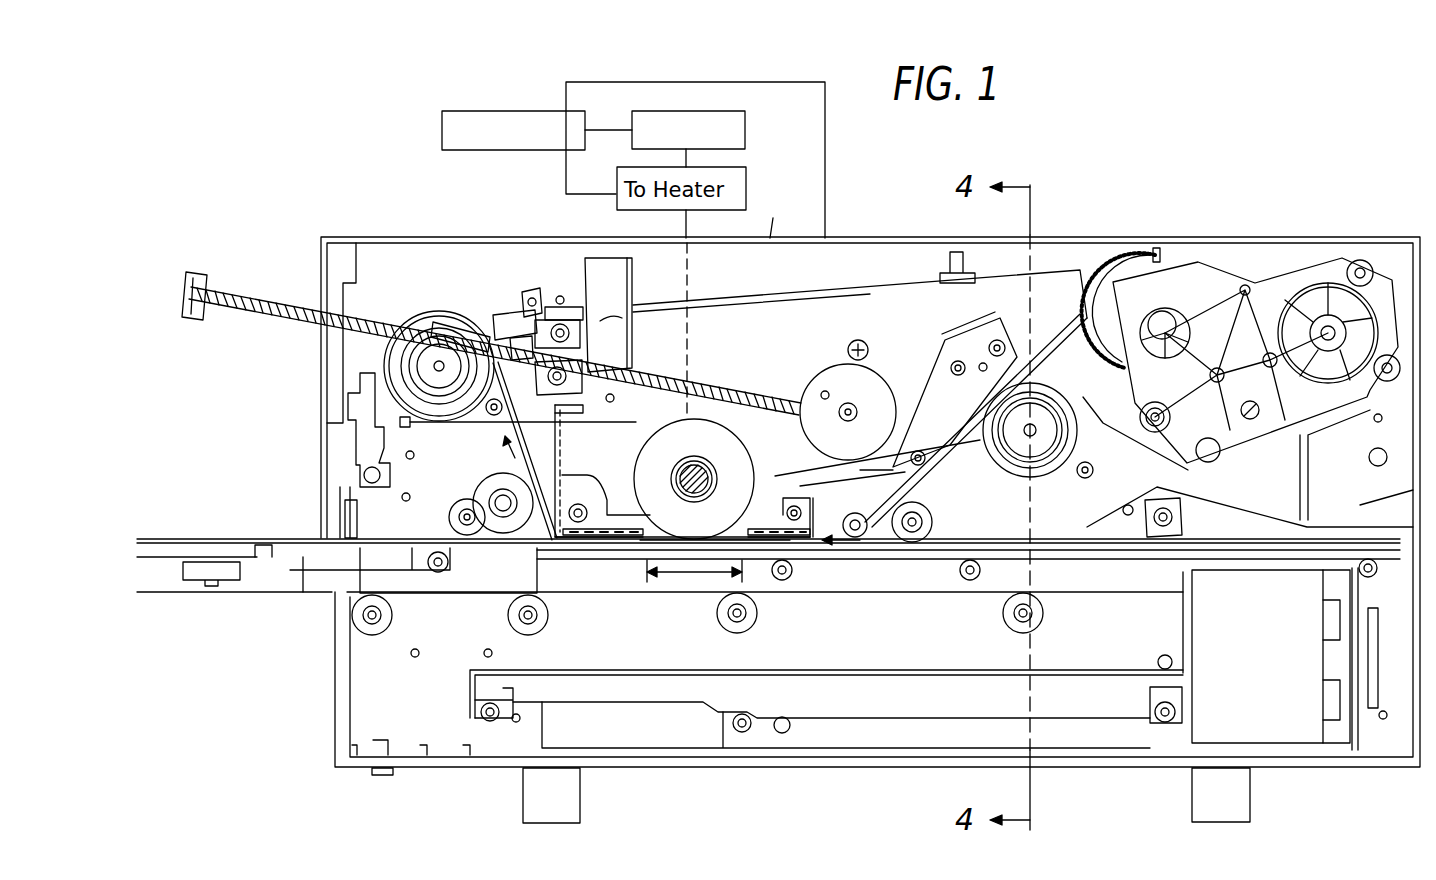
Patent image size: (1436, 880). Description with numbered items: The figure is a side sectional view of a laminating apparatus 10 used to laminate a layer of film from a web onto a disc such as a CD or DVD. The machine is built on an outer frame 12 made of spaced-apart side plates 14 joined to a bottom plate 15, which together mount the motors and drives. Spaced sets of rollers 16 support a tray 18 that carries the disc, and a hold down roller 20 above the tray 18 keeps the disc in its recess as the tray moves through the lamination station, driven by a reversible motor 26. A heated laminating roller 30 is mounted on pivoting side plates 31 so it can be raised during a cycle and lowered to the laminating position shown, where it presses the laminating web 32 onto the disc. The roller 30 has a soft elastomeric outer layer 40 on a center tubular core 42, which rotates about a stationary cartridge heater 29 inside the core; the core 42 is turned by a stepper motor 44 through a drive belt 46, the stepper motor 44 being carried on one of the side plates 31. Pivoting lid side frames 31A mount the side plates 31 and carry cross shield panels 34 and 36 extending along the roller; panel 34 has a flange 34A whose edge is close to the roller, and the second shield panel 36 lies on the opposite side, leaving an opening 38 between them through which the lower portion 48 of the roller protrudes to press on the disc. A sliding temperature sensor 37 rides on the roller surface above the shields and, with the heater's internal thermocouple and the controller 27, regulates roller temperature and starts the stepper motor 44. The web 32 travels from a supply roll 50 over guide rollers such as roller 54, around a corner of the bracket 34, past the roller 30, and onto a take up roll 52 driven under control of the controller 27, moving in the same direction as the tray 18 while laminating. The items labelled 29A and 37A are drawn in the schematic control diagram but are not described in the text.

The laminating apparatus 10 is at (310, 426).
The outer frame 12 is at (372, 682).
The side plate 14 is at (1060, 235).
The bottom plate 15 is at (425, 760).
The rollers 16 is at (507, 605).
The tray 18 is at (215, 535).
The hold down roller 20 is at (480, 478).
The motor 26 is at (1270, 712).
The controller 27 is at (475, 111).
The cartridge heater 29 is at (745, 180).
The heater wiring 29A is at (633, 95).
The heated laminating roller 30 is at (702, 452).
The pivoting side plates 31 is at (850, 306).
The pivoting lid side frames 31A is at (450, 434).
The laminating web 32 is at (930, 492).
The cross shield panel 34 is at (620, 453).
The flange 34A is at (678, 487).
The second shield panel 36 is at (813, 513).
The sliding temperature sensor 37 is at (676, 412).
The temperature sensor 37A is at (715, 111).
The opening 38 is at (690, 580).
The soft elastomeric outer layer 40 is at (727, 452).
The center tubular core 42 is at (723, 470).
The stepper motor 44 is at (862, 383).
The drive belt 46 is at (750, 410).
The lower portion of the roller 48 is at (722, 513).
The supply roll 50 is at (1077, 437).
The take up roll 52 is at (445, 327).
The guide roller 54 is at (867, 535).